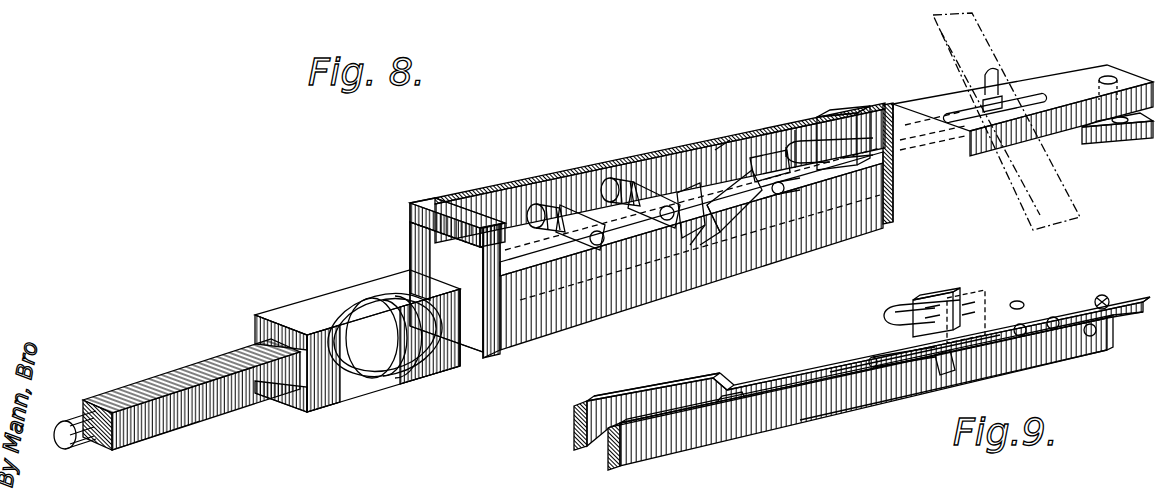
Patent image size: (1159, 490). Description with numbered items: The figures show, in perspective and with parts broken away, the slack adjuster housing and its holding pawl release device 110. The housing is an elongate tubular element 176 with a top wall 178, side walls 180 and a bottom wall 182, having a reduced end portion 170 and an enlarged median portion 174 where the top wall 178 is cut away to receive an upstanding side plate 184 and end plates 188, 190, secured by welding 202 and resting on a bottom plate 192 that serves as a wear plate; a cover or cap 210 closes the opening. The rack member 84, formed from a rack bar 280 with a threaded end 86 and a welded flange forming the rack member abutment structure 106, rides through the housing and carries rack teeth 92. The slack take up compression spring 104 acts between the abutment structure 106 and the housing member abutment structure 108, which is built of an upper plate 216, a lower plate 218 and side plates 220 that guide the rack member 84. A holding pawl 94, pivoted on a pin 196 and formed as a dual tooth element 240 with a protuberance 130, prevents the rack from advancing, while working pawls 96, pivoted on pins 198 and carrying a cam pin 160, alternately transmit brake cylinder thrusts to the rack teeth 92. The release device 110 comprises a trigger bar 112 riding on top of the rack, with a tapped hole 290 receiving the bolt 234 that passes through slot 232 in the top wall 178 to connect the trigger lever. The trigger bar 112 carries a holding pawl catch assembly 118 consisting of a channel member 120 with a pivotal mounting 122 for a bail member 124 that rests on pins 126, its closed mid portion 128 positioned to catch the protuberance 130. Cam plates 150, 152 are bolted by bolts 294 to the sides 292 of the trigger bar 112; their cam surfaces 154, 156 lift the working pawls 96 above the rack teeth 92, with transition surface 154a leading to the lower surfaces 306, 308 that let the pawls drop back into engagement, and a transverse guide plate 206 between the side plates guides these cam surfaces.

In FIG. 8, the rack member 84 is at (172, 375).
In FIG. 8, the threaded end 86 is at (73, 420).
In FIG. 8, the rack teeth 92 is at (712, 252).
In FIG. 8, the holding pawl 94 is at (762, 155).
In FIG. 8, the working pawls 96 is at (540, 205).
In FIG. 8, the slack take up compression spring 104 is at (360, 310).
In FIG. 8, the rack member abutment structure 106 is at (392, 378).
In FIG. 8, the housing member abutment structure 108 is at (322, 410).
In FIG. 8, the holding pawl release device 110 is at (895, 133).
In FIG. 9, the holding pawl release device 110 is at (915, 400).
In FIG. 8, the trigger bar 112 is at (1034, 80).
In FIG. 9, the trigger bar 112 is at (1128, 288).
In FIG. 8, the holding pawl catch assembly 118 is at (840, 112).
In FIG. 9, the holding pawl catch assembly 118 is at (950, 290).
In FIG. 8, the channel member 120 is at (900, 145).
In FIG. 9, the channel member 120 is at (940, 290).
In FIG. 9, the pivotal mounting 122 is at (922, 290).
In FIG. 8, the bail member 124 is at (799, 130).
In FIG. 9, the bail member 124 is at (880, 307).
In FIG. 8, the pins 126 is at (805, 140).
In FIG. 9, the pins 126 is at (890, 320).
In FIG. 8, the closed mid portion 128 is at (795, 142).
In FIG. 9, the closed mid portion 128 is at (875, 365).
In FIG. 8, the protuberance 130 is at (755, 147).
In FIG. 8, the cam plate 150 is at (570, 152).
In FIG. 9, the cam plate 150 is at (572, 434).
In FIG. 8, the cam plate 152 is at (540, 307).
In FIG. 9, the cam plate 152 is at (607, 462).
In FIG. 8, the cam surface 154 is at (588, 172).
In FIG. 9, the cam surface 154 is at (700, 378).
In FIG. 9, the transition cam surface 154a is at (725, 373).
In FIG. 8, the cam surface 156 is at (585, 270).
In FIG. 9, the cam surface 156 is at (642, 420).
In FIG. 8, the cam pin 160 is at (615, 250).
In FIG. 8, the reduced end portion 170 is at (320, 292).
In FIG. 8, the enlarged median portion 174 is at (445, 190).
In FIG. 8, the tubular element 176 is at (333, 405).
In FIG. 8, the top wall 178 is at (420, 270).
In FIG. 8, the side walls 180 is at (460, 340).
In FIG. 8, the bottom wall 182 is at (438, 355).
In FIG. 8, the side plate 184 is at (488, 315).
In FIG. 8, the end plate 188 is at (412, 210).
In FIG. 8, the end plate 190 is at (887, 125).
In FIG. 8, the bottom plate 192 is at (685, 285).
In FIG. 8, the pin 196 is at (723, 123).
In FIG. 8, the pins 198 is at (608, 190).
In FIG. 8, the welding 202 is at (435, 233).
In FIG. 8, the guide plate 206 is at (485, 225).
In FIG. 8, the cover or cap 210 is at (460, 185).
In FIG. 8, the upper plate 216 is at (262, 325).
In FIG. 8, the lower plate 218 is at (290, 408).
In FIG. 8, the side plates 220 is at (330, 345).
In FIG. 8, the slot 232 is at (952, 118).
In FIG. 8, the bolt 234 is at (992, 80).
In FIG. 8, the dual tooth element 240 is at (762, 200).
In FIG. 8, the rack bar 280 is at (182, 425).
In FIG. 8, the tapped hole 290 is at (1108, 88).
In FIG. 9, the tapped hole 290 is at (1102, 298).
In FIG. 9, the sides of trigger bar 292 is at (1128, 320).
In FIG. 9, the bolts 294 is at (1053, 325).
In FIG. 8, the surface 306 is at (690, 205).
In FIG. 9, the surface 306 is at (820, 368).
In FIG. 9, the surface 308 is at (835, 410).